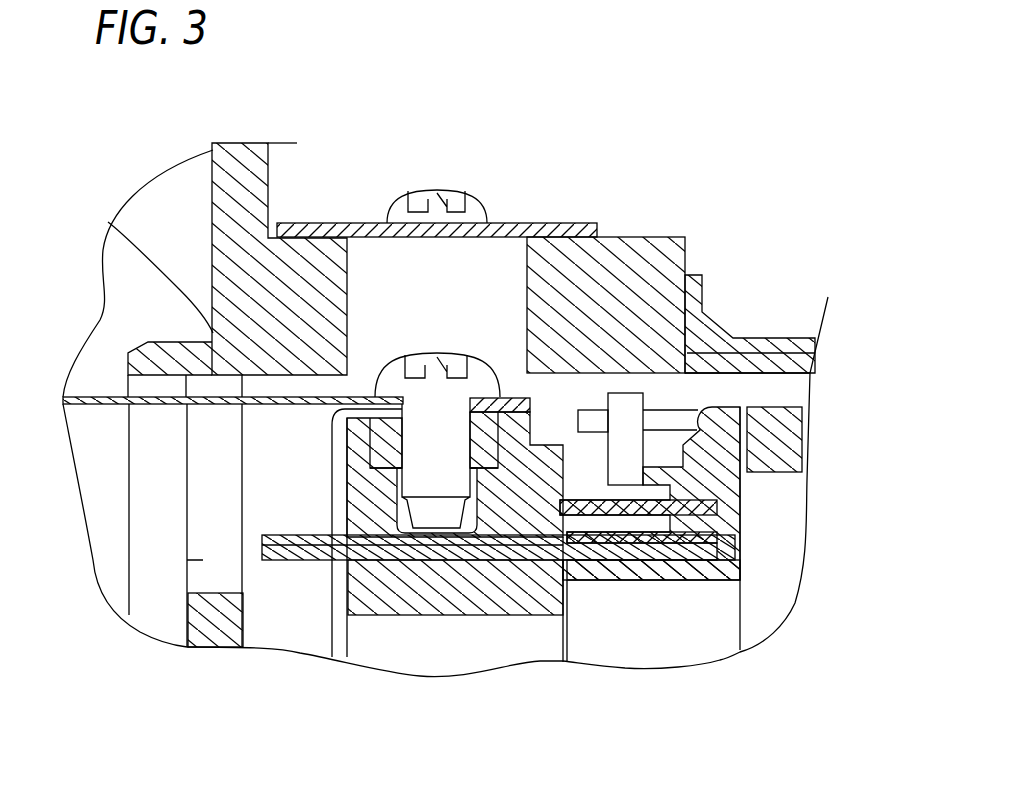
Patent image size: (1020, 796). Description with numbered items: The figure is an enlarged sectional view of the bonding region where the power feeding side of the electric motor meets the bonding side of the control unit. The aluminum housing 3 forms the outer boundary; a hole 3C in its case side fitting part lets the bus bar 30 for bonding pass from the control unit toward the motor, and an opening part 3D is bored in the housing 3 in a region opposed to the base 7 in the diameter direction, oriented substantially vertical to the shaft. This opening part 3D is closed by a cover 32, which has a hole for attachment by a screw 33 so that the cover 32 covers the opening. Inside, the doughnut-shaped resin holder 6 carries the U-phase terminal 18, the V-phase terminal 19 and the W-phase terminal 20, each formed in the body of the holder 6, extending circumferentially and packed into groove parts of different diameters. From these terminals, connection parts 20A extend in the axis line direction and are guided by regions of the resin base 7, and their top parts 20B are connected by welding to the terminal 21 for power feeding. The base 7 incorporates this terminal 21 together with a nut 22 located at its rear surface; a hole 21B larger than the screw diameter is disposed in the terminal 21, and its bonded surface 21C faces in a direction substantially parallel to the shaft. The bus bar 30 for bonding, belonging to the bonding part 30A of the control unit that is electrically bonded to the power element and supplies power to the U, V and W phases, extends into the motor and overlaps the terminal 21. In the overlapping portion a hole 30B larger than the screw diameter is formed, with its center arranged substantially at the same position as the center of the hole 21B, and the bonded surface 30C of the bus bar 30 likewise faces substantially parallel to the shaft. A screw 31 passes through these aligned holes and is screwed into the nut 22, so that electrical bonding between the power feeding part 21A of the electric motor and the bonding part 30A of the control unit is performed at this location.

The housing 3 is at (687, 303).
The hole 3C is at (203, 560).
The opening part 3D is at (387, 278).
The holder 6 is at (707, 465).
The base 7 is at (660, 580).
The U-phase terminal 18 is at (715, 486).
The V-phase terminal 19 is at (720, 513).
The W-phase terminal 20 is at (720, 552).
The connection part 20A is at (512, 565).
The top part 20B is at (272, 555).
The terminal for power feeding 21 is at (390, 450).
The power feeding part 21A is at (510, 393).
The hole 21B is at (590, 580).
The bonded surface 21C is at (473, 392).
The nut 22 is at (388, 452).
The bus bar for bonding 30 is at (58, 397).
The bonding part 30A is at (357, 397).
The hole 30B is at (398, 400).
The bonded surface 30C is at (378, 398).
The screw 31 is at (448, 373).
The cover 32 is at (530, 223).
The screw 33 is at (447, 192).